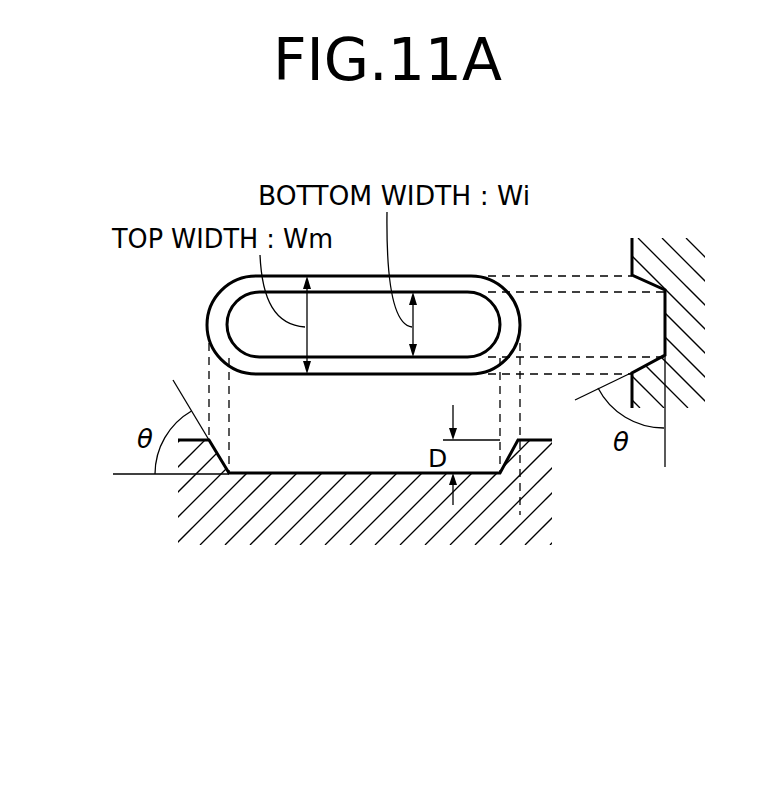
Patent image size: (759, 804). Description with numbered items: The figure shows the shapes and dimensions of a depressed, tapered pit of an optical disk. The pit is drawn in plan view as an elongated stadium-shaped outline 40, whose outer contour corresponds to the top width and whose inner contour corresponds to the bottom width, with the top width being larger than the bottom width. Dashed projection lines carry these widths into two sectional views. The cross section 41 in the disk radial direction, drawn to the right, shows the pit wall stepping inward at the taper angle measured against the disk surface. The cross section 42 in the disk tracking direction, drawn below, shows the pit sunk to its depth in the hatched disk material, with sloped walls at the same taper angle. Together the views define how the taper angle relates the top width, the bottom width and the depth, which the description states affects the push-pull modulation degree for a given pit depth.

The bump (projection) having stadium-shaped cross-section 40 is at (210, 307).
The cross section in the disk radial direction 41 is at (668, 250).
The cross section in the disk tracking direction 42 is at (362, 530).